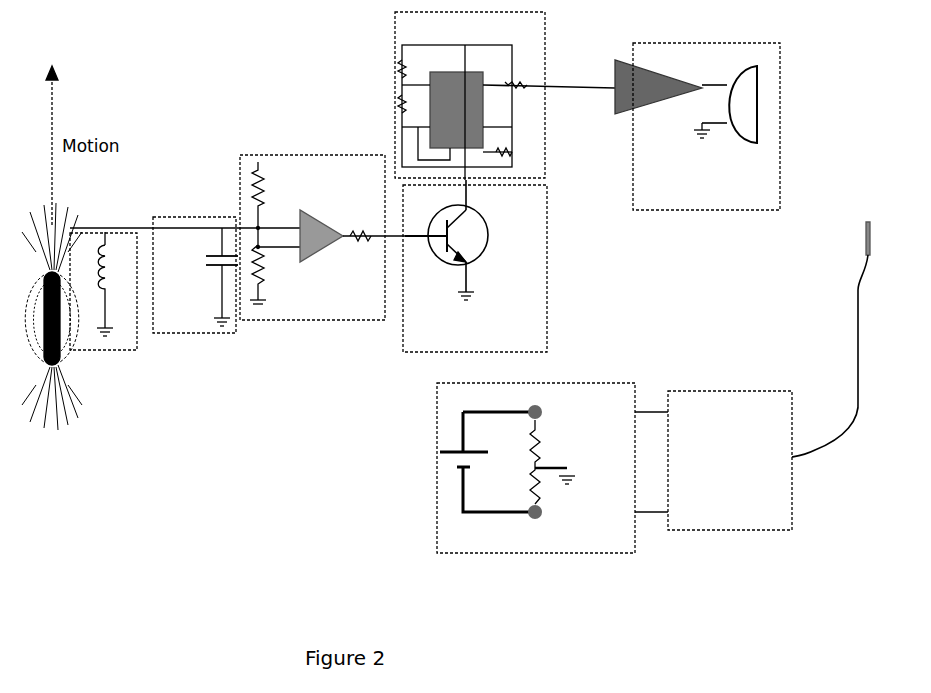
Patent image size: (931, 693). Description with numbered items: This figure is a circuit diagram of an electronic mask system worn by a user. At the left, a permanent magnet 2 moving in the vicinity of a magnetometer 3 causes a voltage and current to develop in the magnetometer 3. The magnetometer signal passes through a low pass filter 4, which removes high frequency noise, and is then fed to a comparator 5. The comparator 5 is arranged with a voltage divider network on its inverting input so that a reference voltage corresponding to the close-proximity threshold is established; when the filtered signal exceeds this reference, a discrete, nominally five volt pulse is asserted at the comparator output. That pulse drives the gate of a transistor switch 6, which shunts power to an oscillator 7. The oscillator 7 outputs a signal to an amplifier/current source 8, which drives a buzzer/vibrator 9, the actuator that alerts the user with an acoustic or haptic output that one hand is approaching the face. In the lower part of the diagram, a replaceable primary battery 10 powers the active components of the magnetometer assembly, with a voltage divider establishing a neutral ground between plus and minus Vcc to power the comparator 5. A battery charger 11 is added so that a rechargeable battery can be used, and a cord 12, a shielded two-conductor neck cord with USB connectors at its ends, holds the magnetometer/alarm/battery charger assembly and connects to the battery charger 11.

The permanent magnet 2 is at (122, 374).
The magnetometer 3 is at (181, 313).
The low pass filter 4 is at (195, 275).
The comparator 5 is at (322, 248).
The transistor switch 6 is at (476, 266).
The oscillator 7 is at (505, 96).
The amplifier/current source 8 is at (687, 65).
The buzzer/vibrator 9 is at (703, 157).
The replaceable primary battery 10 is at (495, 468).
The battery charger 11 is at (728, 472).
The cord 12 is at (758, 339).